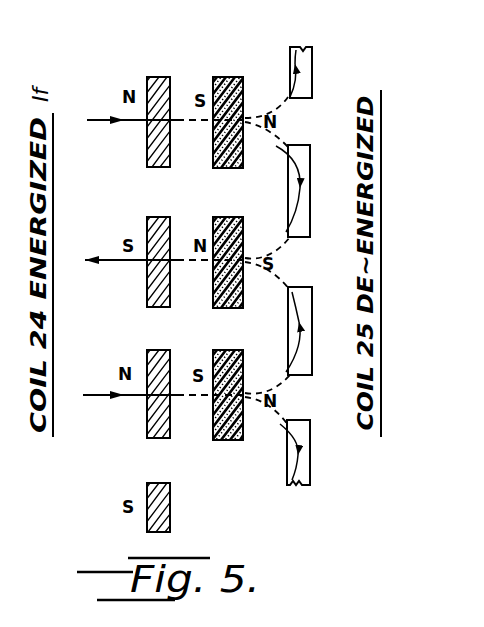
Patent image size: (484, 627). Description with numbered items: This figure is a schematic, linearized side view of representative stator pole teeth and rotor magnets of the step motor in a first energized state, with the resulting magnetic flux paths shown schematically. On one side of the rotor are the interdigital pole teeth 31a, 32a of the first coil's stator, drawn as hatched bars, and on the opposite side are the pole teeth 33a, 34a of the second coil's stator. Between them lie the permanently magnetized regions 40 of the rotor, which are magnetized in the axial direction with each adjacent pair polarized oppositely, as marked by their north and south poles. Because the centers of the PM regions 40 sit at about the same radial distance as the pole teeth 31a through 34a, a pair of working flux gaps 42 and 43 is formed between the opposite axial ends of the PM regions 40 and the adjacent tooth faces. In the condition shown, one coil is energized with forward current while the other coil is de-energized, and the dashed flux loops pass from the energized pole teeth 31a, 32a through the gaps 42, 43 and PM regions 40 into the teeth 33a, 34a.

The outside pole teeth 31a is at (152, 150).
The inside pole teeth 32a is at (152, 287).
The outside pole teeth 33a is at (306, 237).
The inside pole teeth 34a is at (312, 72).
The permanently magnetized regions 40 is at (226, 76).
The working flux gap 42 is at (180, 73).
The working flux gap 43 is at (277, 78).